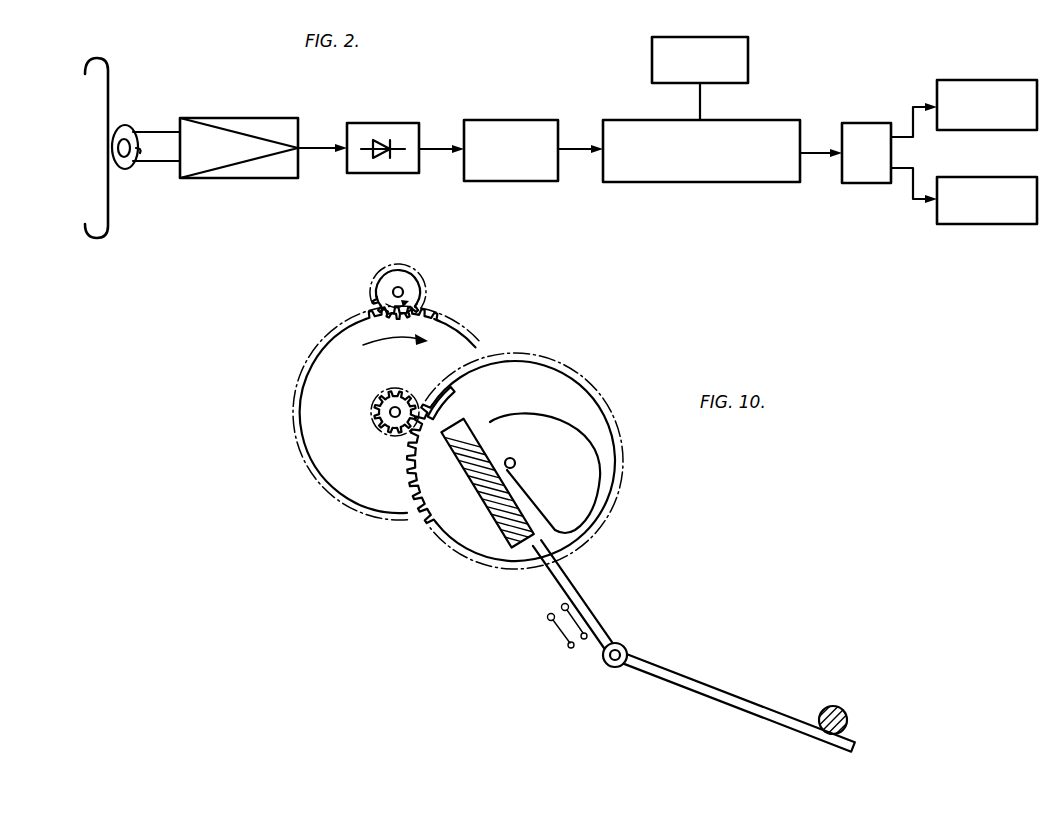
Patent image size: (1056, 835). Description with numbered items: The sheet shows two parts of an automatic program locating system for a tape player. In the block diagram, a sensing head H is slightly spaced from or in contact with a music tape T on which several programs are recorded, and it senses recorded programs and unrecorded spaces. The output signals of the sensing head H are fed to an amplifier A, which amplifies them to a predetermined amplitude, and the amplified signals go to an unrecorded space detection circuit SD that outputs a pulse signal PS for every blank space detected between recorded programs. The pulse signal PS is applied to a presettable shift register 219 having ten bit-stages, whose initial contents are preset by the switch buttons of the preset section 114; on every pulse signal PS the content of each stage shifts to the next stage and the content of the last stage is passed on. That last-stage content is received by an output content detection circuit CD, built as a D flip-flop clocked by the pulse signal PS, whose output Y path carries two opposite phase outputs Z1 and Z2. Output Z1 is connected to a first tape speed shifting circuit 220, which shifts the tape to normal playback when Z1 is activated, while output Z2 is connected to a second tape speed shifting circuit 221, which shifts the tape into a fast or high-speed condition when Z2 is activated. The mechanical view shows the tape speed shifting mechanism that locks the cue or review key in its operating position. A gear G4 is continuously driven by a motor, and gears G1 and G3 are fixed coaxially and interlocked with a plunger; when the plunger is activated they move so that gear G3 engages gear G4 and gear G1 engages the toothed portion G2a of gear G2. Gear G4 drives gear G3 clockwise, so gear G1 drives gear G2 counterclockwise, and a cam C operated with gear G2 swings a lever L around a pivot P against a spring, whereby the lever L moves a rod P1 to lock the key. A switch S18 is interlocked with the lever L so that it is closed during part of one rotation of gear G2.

In FIG. 2, the music tape T is at (108, 209).
In FIG. 2, the sensing head H is at (126, 125).
In FIG. 2, the amplifier A is at (255, 172).
In FIG. 2, the unrecorded space detection circuit SD is at (516, 178).
In FIG. 2, the pulse signal PS is at (567, 148).
In FIG. 2, the preset section 114 is at (717, 37).
In FIG. 2, the presettable shift register 219 is at (713, 176).
In FIG. 2, the output signal Y is at (823, 150).
In FIG. 2, the output content detection circuit CD is at (868, 183).
In FIG. 2, the output Z1 is at (917, 105).
In FIG. 2, the output Z2 is at (917, 201).
In FIG. 2, the first tape speed shifting circuit 220 is at (1020, 80).
In FIG. 2, the second tape speed shifting circuit 221 is at (980, 224).
In FIG. 10, the gear G1 is at (380, 400).
In FIG. 10, the gear G2 is at (494, 445).
In FIG. 10, the toothed portion of gear G2 G2a is at (400, 464).
In FIG. 10, the gear G3 is at (312, 462).
In FIG. 10, the gear G4 is at (421, 290).
In FIG. 10, the cam C is at (552, 420).
In FIG. 10, the switch S18 is at (566, 625).
In FIG. 10, the pivot P is at (604, 660).
In FIG. 10, the lever L is at (770, 708).
In FIG. 10, the rod P1 is at (844, 711).